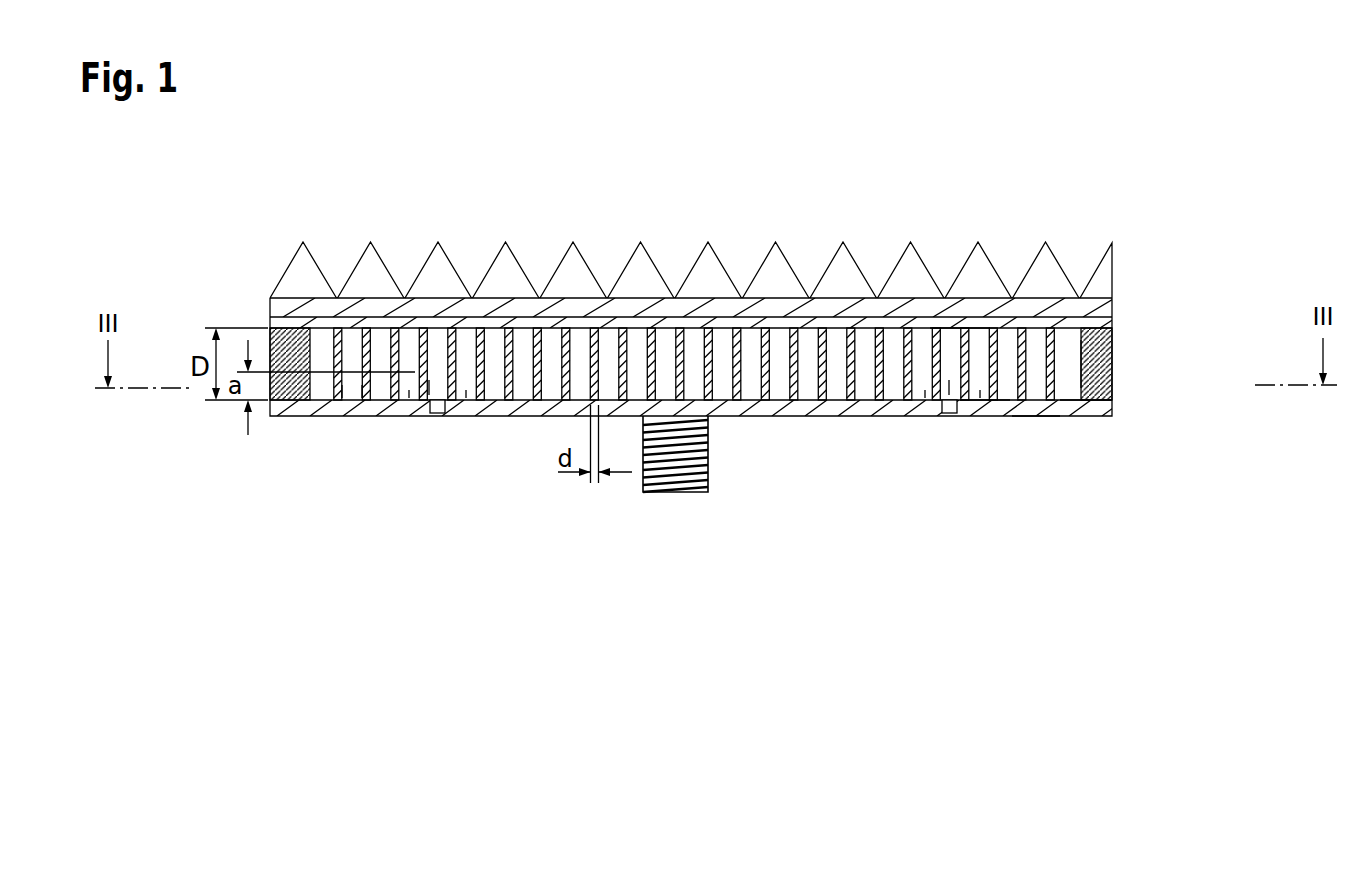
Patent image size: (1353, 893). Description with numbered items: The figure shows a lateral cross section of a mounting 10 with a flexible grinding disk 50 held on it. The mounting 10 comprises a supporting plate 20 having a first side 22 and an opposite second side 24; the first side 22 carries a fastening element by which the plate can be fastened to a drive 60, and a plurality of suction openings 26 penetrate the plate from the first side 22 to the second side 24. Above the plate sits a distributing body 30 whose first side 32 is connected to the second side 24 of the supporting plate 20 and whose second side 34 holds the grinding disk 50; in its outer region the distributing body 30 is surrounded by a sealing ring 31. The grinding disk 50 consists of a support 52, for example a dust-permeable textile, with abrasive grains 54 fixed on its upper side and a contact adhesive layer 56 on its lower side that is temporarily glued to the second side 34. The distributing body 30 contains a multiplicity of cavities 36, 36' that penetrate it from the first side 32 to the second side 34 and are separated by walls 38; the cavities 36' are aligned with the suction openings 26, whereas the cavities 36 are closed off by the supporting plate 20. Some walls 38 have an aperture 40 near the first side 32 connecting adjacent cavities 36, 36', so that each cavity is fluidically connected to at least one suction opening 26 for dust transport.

The mounting 10 is at (1197, 345).
The supporting plate 20 is at (1112, 408).
The first side of the supporting plate 22 is at (987, 405).
The second side of the supporting plate 24 is at (1027, 382).
The suction openings 26 is at (950, 401).
The distributing body 30 is at (1112, 354).
The sealing ring 31 is at (1130, 379).
The first side of the distributing body 32 is at (1070, 402).
The second side of the distributing body 34 is at (953, 323).
The cavities 36 is at (694, 400).
The cavities 36' is at (685, 292).
The walls 38 is at (378, 385).
The aperture 40 is at (978, 385).
The grinding disk 50 is at (1197, 250).
The support 52 is at (1112, 306).
The abrasive grains 54 is at (1112, 273).
The contact adhesive layer 56 is at (1112, 322).
The drive 60 is at (677, 493).